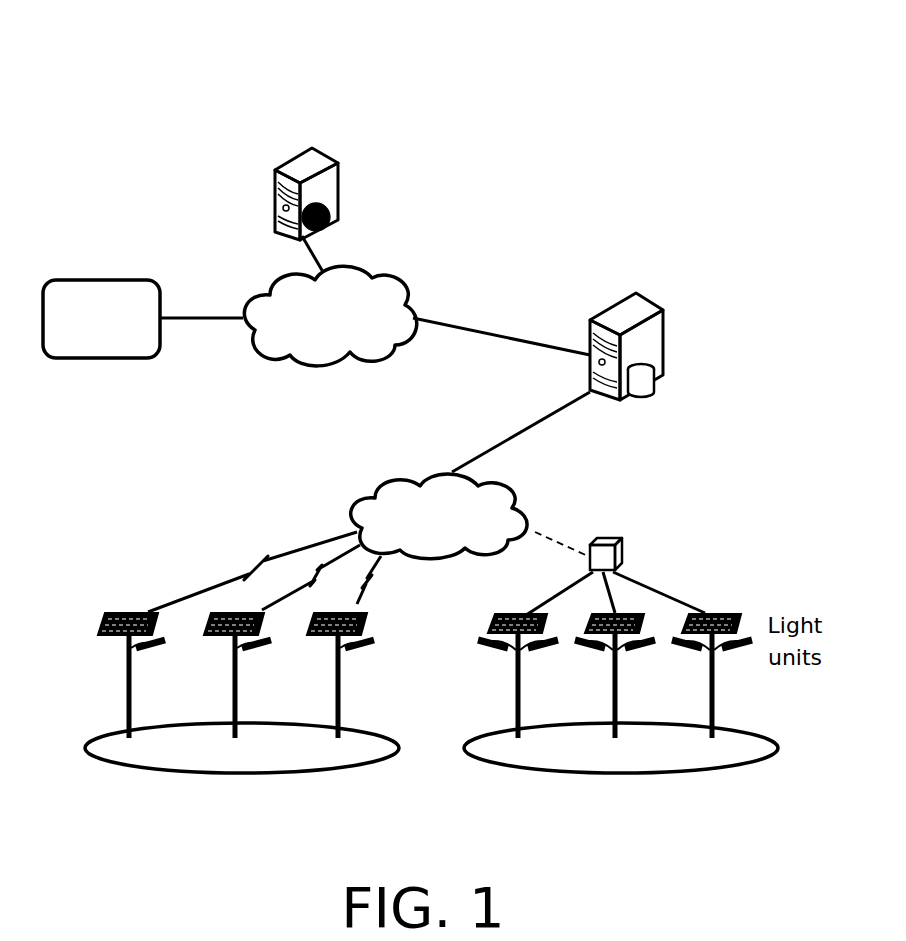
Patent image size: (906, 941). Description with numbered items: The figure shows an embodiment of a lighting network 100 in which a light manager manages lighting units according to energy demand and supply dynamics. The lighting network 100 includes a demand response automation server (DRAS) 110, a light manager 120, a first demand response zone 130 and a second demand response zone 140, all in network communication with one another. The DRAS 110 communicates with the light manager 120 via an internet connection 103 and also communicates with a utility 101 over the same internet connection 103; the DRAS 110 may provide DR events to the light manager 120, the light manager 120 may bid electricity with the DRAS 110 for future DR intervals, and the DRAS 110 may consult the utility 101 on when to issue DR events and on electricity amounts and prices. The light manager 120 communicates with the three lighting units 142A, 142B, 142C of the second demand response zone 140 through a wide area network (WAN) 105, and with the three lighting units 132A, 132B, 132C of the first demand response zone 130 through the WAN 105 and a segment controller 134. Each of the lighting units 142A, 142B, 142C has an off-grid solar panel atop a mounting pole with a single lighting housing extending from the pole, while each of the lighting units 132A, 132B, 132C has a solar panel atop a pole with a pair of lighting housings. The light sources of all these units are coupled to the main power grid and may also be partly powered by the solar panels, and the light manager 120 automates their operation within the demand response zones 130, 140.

The lighting network 100 is at (626, 85).
The utility 101 is at (90, 358).
The internet connection 103 is at (320, 365).
The wide area network (WAN) 105 is at (493, 488).
The demand response automation server (DRAS) 110 is at (318, 158).
The light manager 120 is at (640, 305).
The first demand response zone 130 is at (635, 773).
The lighting unit 132A is at (490, 684).
The lighting unit 132B is at (600, 677).
The lighting unit 132C is at (703, 677).
The segment controller 134 is at (606, 540).
The second demand response zone 140 is at (255, 773).
The lighting unit 142A is at (95, 684).
The lighting unit 142B is at (220, 677).
The lighting unit 142C is at (325, 677).